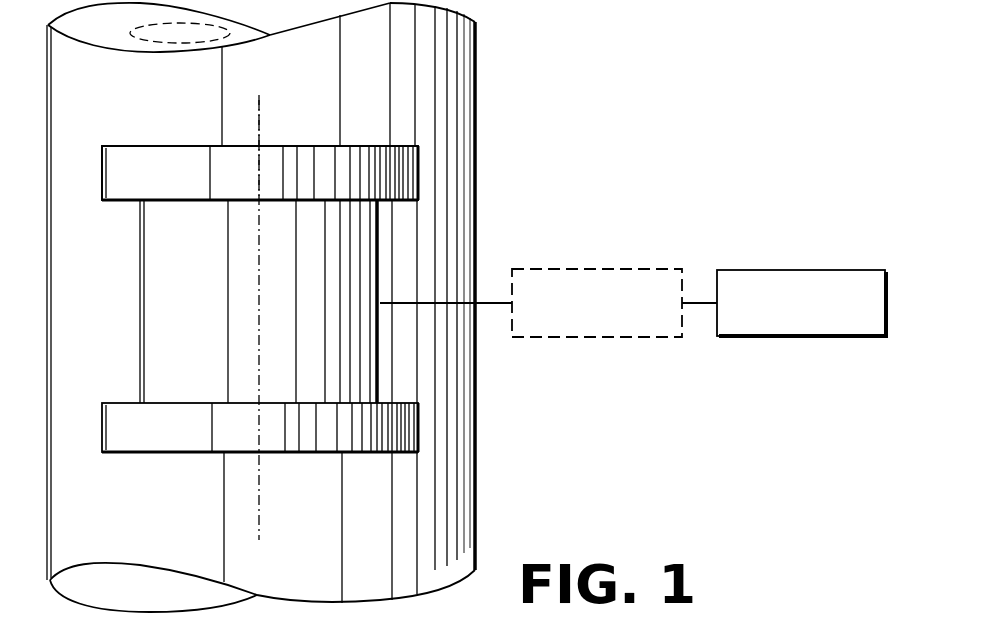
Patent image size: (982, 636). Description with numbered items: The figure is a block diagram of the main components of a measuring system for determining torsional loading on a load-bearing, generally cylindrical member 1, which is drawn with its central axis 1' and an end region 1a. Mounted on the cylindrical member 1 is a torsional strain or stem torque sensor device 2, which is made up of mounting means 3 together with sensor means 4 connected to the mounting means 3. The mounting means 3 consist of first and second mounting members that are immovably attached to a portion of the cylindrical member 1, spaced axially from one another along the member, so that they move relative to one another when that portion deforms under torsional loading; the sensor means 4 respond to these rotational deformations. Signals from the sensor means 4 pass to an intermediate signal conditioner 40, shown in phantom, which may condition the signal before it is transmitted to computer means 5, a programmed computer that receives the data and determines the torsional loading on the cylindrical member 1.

The cylindrical member 1 is at (292, 307).
The axis bore / end opening 1a is at (185, 32).
The central axis 1' is at (284, 144).
The torsional strain or stem torque sensor device 2 is at (200, 146).
The mounting means 3 is at (100, 173).
The sensor means 4 is at (200, 283).
The signal conditioner 40 is at (565, 268).
The computer means 5 is at (757, 268).